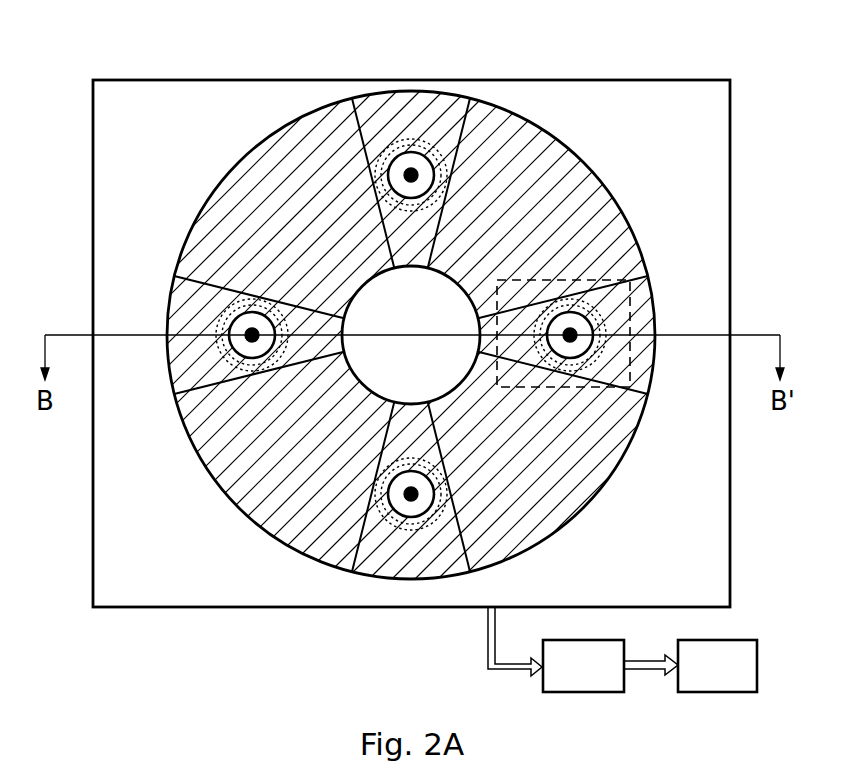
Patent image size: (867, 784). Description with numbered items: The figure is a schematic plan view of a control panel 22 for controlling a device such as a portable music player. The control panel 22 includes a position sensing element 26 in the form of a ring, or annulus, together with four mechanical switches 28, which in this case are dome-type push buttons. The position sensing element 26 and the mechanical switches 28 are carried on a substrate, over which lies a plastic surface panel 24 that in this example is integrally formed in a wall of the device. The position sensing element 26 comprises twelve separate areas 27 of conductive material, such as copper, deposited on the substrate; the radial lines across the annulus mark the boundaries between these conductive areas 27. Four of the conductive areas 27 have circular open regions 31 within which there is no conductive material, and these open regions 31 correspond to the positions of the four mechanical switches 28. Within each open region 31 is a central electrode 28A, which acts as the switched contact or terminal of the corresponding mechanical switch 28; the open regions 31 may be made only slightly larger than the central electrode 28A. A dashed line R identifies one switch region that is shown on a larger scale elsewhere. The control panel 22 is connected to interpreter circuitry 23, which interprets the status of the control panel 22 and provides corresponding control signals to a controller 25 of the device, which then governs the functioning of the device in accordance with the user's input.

The control panel 22 is at (553, 80).
The interpreter circuitry 23 is at (600, 680).
The surface panel 24 is at (154, 129).
The controller 25 is at (734, 680).
The position sensing element 26 is at (244, 167).
The conductive areas 27 is at (385, 577).
The mechanical switches 28 is at (434, 179).
The central electrode 28A is at (404, 177).
The open regions 31 is at (403, 143).
The region R is at (563, 312).